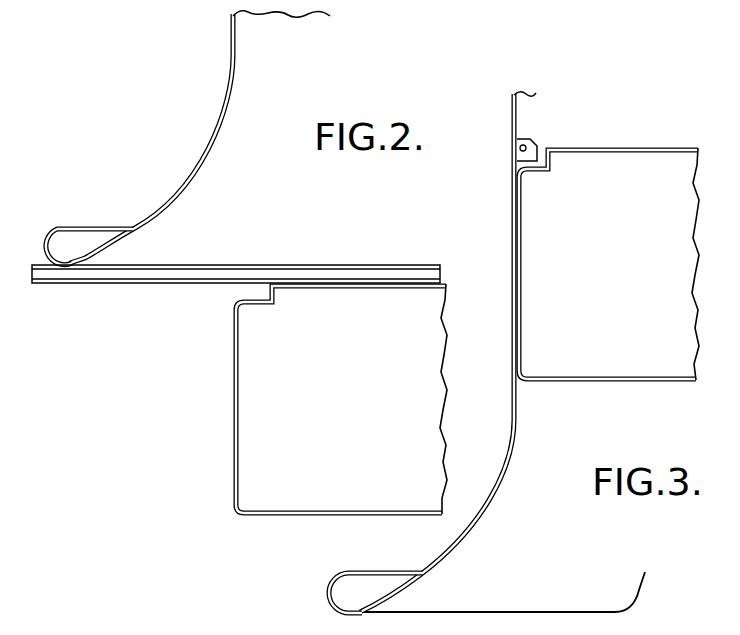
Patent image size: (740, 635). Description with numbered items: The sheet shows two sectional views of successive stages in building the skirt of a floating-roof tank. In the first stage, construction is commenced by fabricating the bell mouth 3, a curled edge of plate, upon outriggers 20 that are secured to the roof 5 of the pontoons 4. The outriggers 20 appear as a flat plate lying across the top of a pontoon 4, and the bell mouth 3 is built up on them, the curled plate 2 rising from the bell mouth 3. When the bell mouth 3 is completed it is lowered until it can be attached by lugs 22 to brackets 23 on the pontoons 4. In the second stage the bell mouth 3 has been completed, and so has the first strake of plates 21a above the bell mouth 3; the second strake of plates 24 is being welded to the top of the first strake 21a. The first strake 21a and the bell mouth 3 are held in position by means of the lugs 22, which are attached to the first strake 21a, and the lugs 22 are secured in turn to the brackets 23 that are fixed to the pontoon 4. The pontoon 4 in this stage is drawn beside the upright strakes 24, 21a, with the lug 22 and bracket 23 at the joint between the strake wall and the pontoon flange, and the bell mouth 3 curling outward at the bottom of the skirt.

In FIG. 2, the sheet metal panel 2 is at (228, 40).
In FIG. 2, the bell mouth 3 is at (74, 241).
In FIG. 3, the bell mouth 3 is at (368, 589).
In FIG. 2, the outriggers 20 is at (167, 276).
In FIG. 2, the pontoons 4 is at (234, 392).
In FIG. 3, the pontoons 4 is at (525, 213).
In FIG. 2, the roof 5 is at (408, 284).
In FIG. 3, the second strake of plates 24 is at (512, 112).
In FIG. 3, the lugs 22 is at (512, 146).
In FIG. 3, the brackets 23 is at (517, 165).
In FIG. 3, the first strake of plates 21a is at (513, 272).